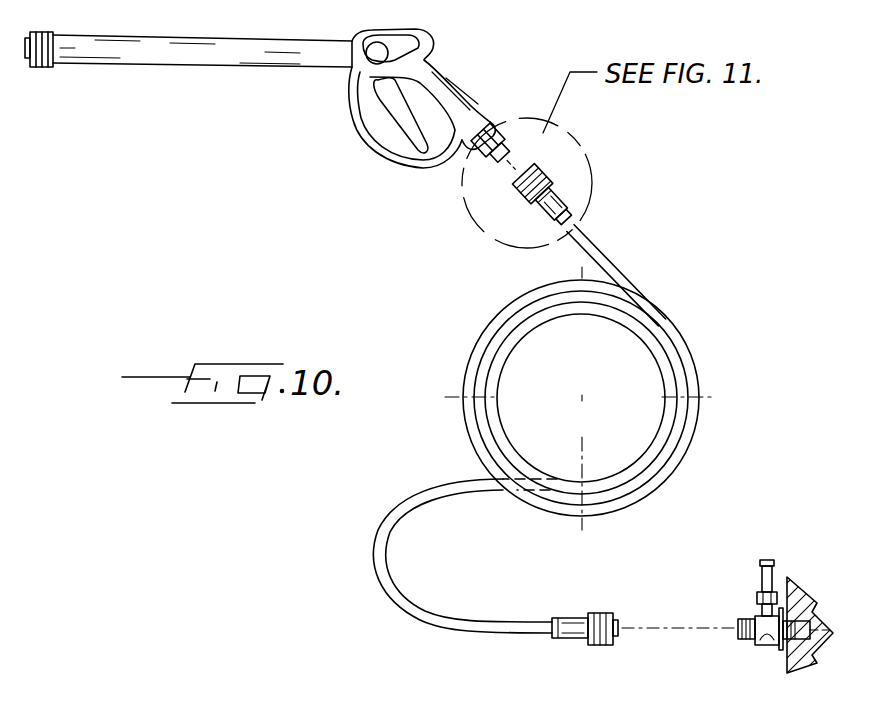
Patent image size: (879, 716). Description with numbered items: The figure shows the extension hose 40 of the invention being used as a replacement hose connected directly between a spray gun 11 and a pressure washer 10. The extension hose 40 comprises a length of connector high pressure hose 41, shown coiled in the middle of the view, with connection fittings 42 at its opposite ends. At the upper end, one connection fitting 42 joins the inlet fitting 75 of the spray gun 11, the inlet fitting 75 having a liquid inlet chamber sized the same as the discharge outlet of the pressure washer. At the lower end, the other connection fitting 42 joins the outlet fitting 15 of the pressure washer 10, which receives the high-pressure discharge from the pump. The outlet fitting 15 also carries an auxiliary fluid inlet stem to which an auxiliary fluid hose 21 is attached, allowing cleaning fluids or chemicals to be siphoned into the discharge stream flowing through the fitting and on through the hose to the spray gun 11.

The pressure washer 10 is at (813, 580).
The spray gun 11 is at (207, 72).
The outlet fitting 15 is at (738, 640).
The auxiliary fluid hose 21 is at (760, 575).
The extension hose 40 is at (480, 322).
The connector high pressure hose 41 is at (610, 250).
The connection fittings 42 is at (567, 167).
The inlet fitting 75 is at (487, 160).